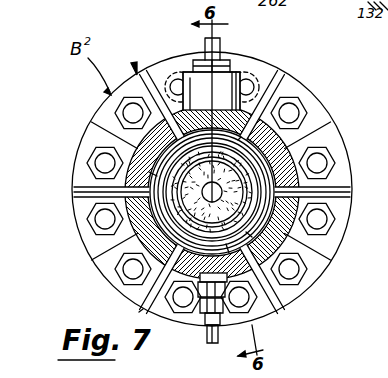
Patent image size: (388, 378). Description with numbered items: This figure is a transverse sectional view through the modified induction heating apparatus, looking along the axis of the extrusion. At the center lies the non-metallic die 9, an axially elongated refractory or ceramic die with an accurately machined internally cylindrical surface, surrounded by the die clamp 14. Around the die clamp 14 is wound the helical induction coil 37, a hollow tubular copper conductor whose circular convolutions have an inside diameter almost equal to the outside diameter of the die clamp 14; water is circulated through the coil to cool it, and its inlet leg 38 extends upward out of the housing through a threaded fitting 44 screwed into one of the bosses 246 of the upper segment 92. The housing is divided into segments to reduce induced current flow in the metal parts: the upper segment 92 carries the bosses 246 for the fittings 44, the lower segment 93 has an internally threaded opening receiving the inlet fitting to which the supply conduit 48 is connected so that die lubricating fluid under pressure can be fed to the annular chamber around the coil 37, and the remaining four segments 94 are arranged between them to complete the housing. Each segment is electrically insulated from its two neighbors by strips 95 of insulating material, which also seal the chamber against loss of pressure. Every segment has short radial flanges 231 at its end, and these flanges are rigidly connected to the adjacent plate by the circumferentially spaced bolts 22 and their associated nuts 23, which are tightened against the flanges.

The die clamp 14 is at (194, 200).
The helical induction coil 37 is at (175, 165).
The non-metallic die 9 is at (244, 165).
The bolts 22 is at (197, 180).
The nuts 23 is at (212, 188).
The radial flanges 231 is at (213, 178).
The bosses 246 is at (250, 78).
The threaded fittings 44 is at (193, 62).
The inlet leg 38 is at (223, 48).
The supply conduit 48 is at (206, 340).
The upper segment 92 is at (283, 83).
The lower segment 93 is at (148, 308).
The segments 94 is at (212, 188).
The strips 95 is at (228, 210).